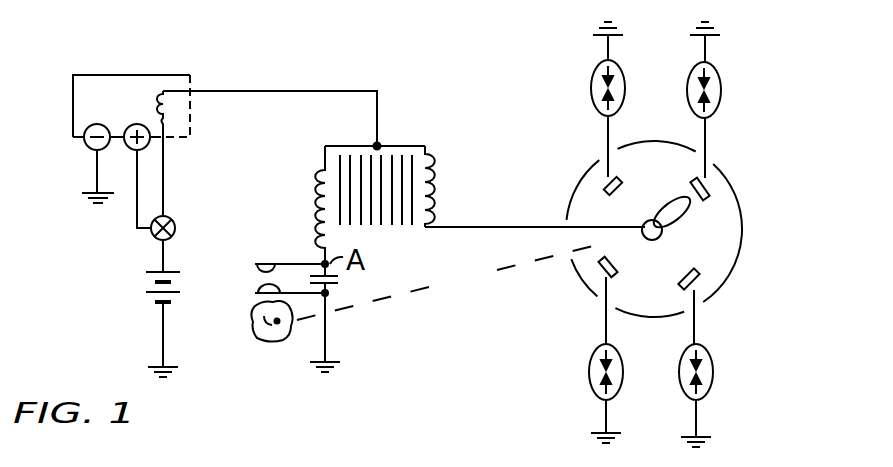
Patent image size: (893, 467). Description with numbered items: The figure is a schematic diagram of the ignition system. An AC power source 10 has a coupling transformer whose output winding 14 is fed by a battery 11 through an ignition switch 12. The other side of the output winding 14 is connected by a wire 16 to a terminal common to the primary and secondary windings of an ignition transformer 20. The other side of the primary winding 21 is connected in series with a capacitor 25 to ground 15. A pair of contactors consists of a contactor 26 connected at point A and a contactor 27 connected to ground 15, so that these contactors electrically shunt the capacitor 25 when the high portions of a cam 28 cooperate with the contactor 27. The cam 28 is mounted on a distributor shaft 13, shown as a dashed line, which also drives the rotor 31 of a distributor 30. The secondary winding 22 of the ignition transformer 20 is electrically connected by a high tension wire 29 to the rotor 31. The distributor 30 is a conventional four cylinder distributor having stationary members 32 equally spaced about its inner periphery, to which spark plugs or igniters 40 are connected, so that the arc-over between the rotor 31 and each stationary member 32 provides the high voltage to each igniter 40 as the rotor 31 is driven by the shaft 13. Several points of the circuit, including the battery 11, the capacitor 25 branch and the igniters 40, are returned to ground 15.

The AC power source 10 is at (122, 110).
The battery 11 is at (150, 272).
The ignition switch 12 is at (175, 228).
The distributor shaft 13 is at (451, 281).
The output winding 14 is at (170, 113).
The ground 15 is at (91, 193).
The wire 16 is at (305, 92).
The ignition transformer 20 is at (388, 136).
The primary winding 21 is at (322, 183).
The secondary winding 22 is at (433, 172).
The capacitor 25 is at (340, 285).
The contactor 26 is at (274, 268).
The contactor 27 is at (258, 290).
The cam 28 is at (275, 345).
The high tension wire 29 is at (467, 226).
The distributor 30 is at (745, 199).
The rotor 31 is at (663, 226).
The stationary members 32 is at (673, 168).
The spark plugs or igniters 40 is at (672, 93).